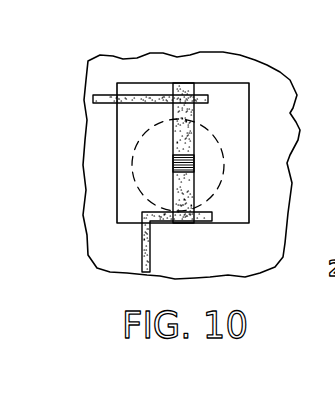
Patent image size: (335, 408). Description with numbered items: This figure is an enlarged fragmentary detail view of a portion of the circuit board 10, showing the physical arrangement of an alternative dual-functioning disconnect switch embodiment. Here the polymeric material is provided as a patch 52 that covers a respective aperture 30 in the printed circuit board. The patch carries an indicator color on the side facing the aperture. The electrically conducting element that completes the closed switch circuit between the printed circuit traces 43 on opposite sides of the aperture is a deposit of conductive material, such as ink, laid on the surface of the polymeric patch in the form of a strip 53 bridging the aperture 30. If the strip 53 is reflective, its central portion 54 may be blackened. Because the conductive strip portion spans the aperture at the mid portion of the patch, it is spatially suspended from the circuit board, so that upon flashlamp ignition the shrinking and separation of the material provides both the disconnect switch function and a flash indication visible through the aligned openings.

The housing body 10 is at (253, 73).
The aperture 30 is at (218, 190).
The printed circuit traces 43 is at (98, 90).
The patch 52 is at (242, 128).
The strip 53 is at (183, 119).
The central portion 54 is at (183, 165).